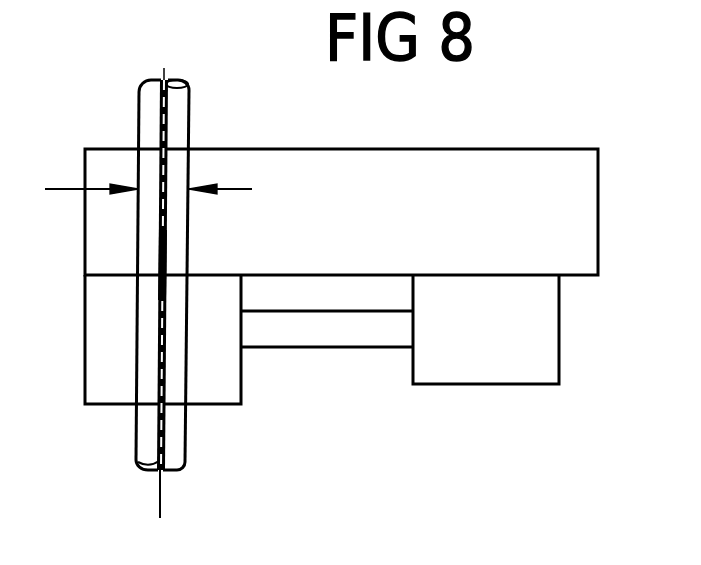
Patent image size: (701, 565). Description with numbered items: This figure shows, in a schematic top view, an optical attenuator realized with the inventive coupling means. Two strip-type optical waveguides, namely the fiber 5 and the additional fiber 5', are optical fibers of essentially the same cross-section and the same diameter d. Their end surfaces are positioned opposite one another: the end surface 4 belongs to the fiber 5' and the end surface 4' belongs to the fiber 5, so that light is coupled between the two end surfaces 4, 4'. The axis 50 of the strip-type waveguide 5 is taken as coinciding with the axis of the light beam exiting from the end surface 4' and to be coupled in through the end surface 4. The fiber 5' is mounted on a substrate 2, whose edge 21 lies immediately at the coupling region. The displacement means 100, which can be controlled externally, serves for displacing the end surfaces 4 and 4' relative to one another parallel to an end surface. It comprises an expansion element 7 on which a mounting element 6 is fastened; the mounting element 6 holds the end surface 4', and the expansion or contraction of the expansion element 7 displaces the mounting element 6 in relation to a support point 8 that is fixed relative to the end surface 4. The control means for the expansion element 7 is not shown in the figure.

The substrate 2 is at (510, 180).
The waveguide end surface 4 is at (100, 275).
The waveguide end surface 4' is at (217, 255).
The strip-type waveguide 5 is at (110, 275).
The strip-type waveguide 5' is at (218, 273).
The mounting element 6 is at (105, 360).
The expansion element 7 is at (362, 337).
The support point 8 is at (536, 340).
The edge of the substrate 21 is at (350, 292).
The axis of the strip-type waveguide 50 is at (156, 497).
The displacement means 100 is at (300, 350).
The diameter d is at (148, 170).